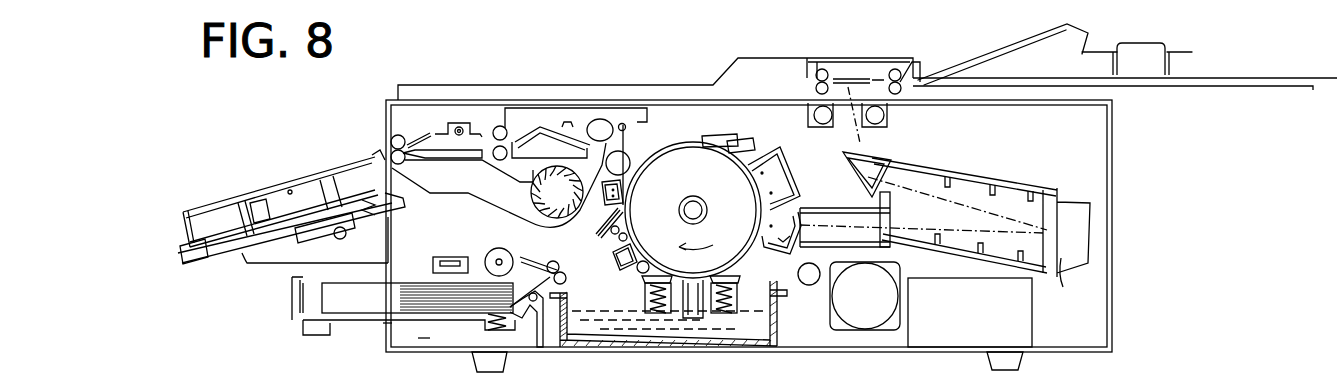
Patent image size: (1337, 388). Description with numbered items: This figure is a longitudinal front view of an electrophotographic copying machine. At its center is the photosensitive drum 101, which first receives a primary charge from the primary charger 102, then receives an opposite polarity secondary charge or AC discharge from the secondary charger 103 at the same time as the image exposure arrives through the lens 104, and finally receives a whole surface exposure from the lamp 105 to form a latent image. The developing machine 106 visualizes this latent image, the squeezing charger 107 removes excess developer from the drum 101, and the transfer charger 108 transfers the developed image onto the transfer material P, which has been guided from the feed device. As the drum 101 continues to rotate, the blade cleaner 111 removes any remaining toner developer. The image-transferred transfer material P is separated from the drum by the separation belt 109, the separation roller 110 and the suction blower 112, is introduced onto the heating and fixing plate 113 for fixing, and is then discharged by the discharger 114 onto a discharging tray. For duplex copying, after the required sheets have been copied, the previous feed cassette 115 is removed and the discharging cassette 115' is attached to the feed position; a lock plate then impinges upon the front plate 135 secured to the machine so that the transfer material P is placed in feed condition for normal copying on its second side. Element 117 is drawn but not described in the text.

The photosensitive drum 101 is at (696, 141).
The primary charger 102 is at (783, 159).
The secondary charger 103 is at (771, 254).
The lens 104 is at (945, 232).
The lamp 105 is at (809, 286).
The developing machine 106 is at (706, 315).
The squeezing charger 107 is at (596, 250).
The transfer charger 108 is at (625, 208).
The separation belt 109 is at (622, 124).
The separation roller 110 is at (631, 152).
The blade cleaner 111 is at (748, 140).
The suction blower 112 is at (498, 180).
The heating and fixing plate 113 is at (524, 115).
The discharger 114 is at (463, 122).
The feed cassette 115 is at (403, 323).
The discharging cassette 115' is at (291, 199).
The feed rollers 117 is at (566, 271).
The front plate 135 is at (527, 332).
The transfer material P is at (423, 338).